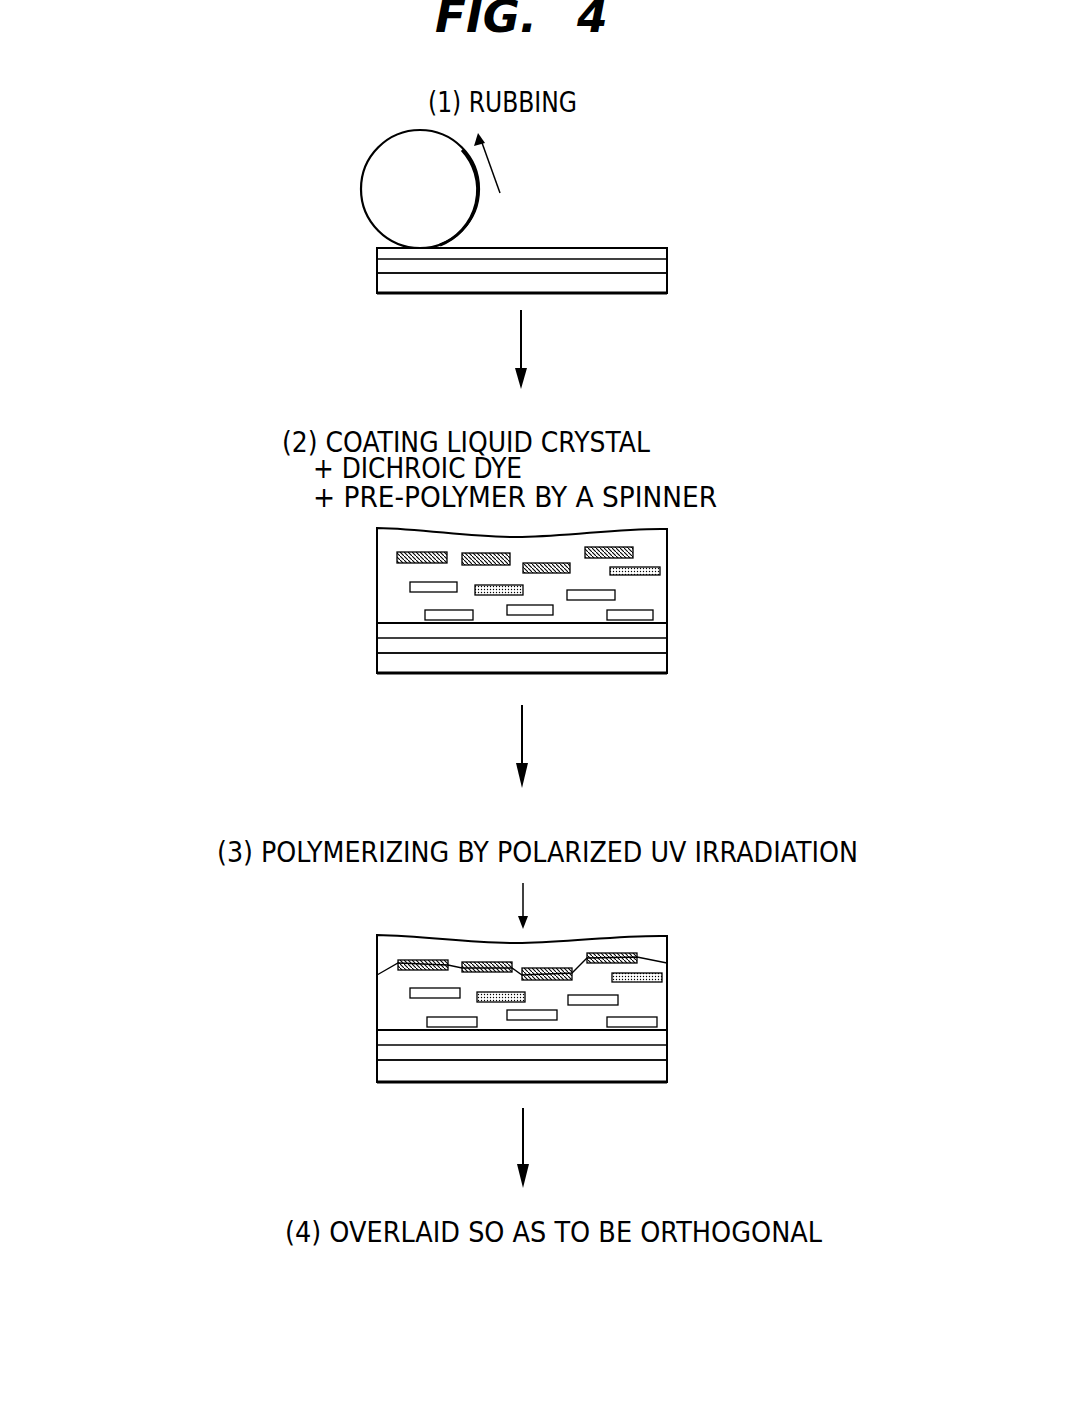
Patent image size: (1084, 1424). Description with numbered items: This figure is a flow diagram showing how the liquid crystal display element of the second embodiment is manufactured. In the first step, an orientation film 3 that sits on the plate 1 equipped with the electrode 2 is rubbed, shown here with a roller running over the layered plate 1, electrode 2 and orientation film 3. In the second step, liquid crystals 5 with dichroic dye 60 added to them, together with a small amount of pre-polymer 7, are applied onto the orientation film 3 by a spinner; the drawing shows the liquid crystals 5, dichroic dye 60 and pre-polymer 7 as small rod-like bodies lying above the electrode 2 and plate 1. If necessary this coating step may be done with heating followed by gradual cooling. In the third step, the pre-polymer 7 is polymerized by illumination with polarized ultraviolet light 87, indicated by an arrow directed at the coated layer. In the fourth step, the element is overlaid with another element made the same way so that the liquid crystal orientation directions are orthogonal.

The plate 1 is at (660, 283).
The electrode 2 is at (660, 265).
The orientation film 3 is at (665, 248).
The liquid crystals 5 is at (655, 612).
The pre-polymer 7 is at (633, 548).
The dichroic dye 60 is at (667, 570).
The light 87 is at (525, 908).